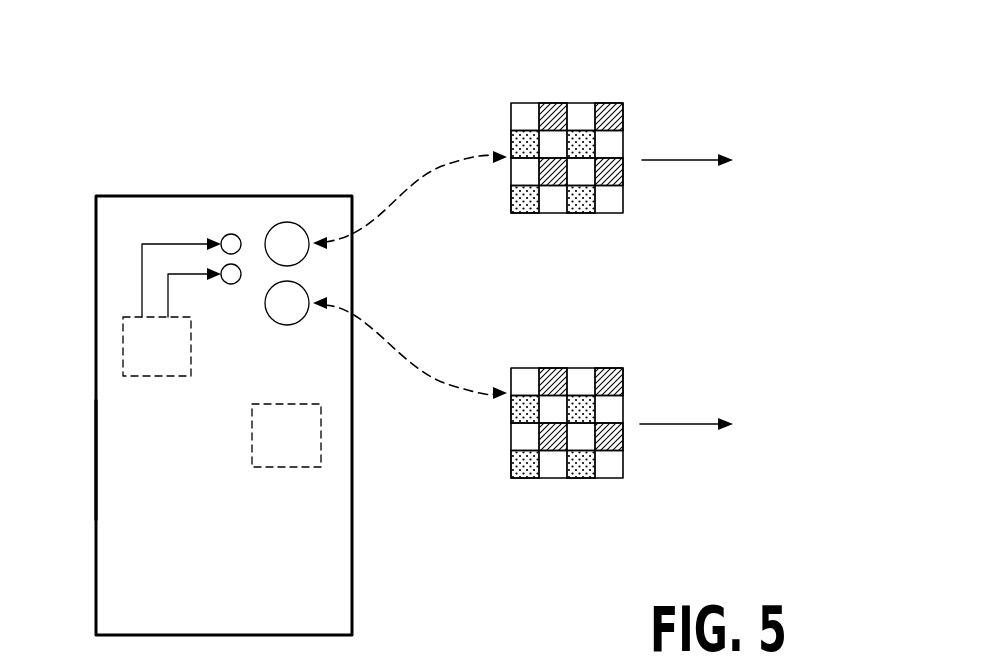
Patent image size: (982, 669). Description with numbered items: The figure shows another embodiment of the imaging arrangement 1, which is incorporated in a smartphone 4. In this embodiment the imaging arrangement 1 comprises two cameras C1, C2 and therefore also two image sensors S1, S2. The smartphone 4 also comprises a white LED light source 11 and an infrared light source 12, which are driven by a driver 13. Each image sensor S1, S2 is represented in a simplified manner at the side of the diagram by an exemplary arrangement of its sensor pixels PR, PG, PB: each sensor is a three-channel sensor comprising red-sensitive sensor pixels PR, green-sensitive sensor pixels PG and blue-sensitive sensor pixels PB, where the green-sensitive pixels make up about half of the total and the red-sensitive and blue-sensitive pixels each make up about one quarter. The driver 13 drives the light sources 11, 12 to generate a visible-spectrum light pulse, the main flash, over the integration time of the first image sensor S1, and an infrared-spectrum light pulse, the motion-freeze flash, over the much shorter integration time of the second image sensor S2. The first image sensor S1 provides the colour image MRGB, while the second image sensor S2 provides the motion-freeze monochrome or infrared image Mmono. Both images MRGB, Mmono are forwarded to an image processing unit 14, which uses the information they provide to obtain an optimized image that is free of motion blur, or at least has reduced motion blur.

The imaging arrangement 1 is at (156, 178).
The smartphone 4 is at (95, 472).
The white LED light source 11 is at (230, 234).
The infrared light source 12 is at (240, 267).
The driver 13 is at (123, 347).
The image processing unit 14 is at (321, 442).
The first camera C1 is at (288, 222).
The second camera C2 is at (303, 287).
The first image sensor S1 is at (523, 103).
The second image sensor S2 is at (523, 368).
The red-sensitive sensor pixels PR is at (607, 110).
The green-sensitive sensor pixels PG is at (612, 145).
The blue-sensitive sensor pixels PB is at (582, 205).
The colour image MRGB is at (729, 162).
The motion-freeze monochrome image Mmono is at (733, 429).